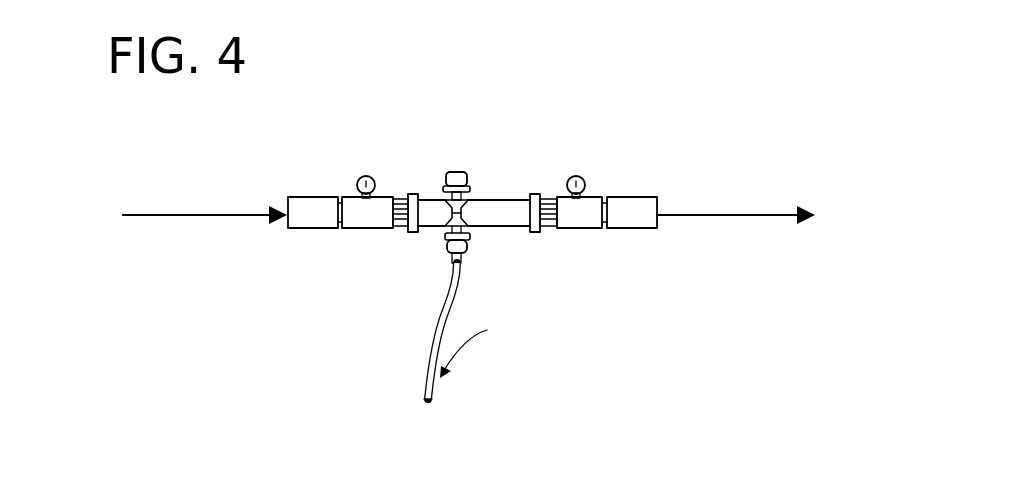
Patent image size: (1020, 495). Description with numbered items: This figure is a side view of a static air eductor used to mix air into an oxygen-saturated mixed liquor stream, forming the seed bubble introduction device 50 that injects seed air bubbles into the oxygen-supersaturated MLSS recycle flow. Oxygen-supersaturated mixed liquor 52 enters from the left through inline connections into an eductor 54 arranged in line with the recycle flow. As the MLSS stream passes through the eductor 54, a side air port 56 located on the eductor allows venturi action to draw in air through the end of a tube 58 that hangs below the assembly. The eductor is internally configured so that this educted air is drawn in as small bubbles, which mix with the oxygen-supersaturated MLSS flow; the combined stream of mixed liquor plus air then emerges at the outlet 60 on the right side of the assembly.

The seed bubble introduction device 50 is at (459, 84).
The oxygen-supersaturated mixed liquor 52 is at (217, 213).
The eductor 54 is at (497, 200).
The side air port 56 is at (467, 250).
The tube 58 is at (423, 393).
The mixed liquor plus air outlet 60 is at (725, 215).